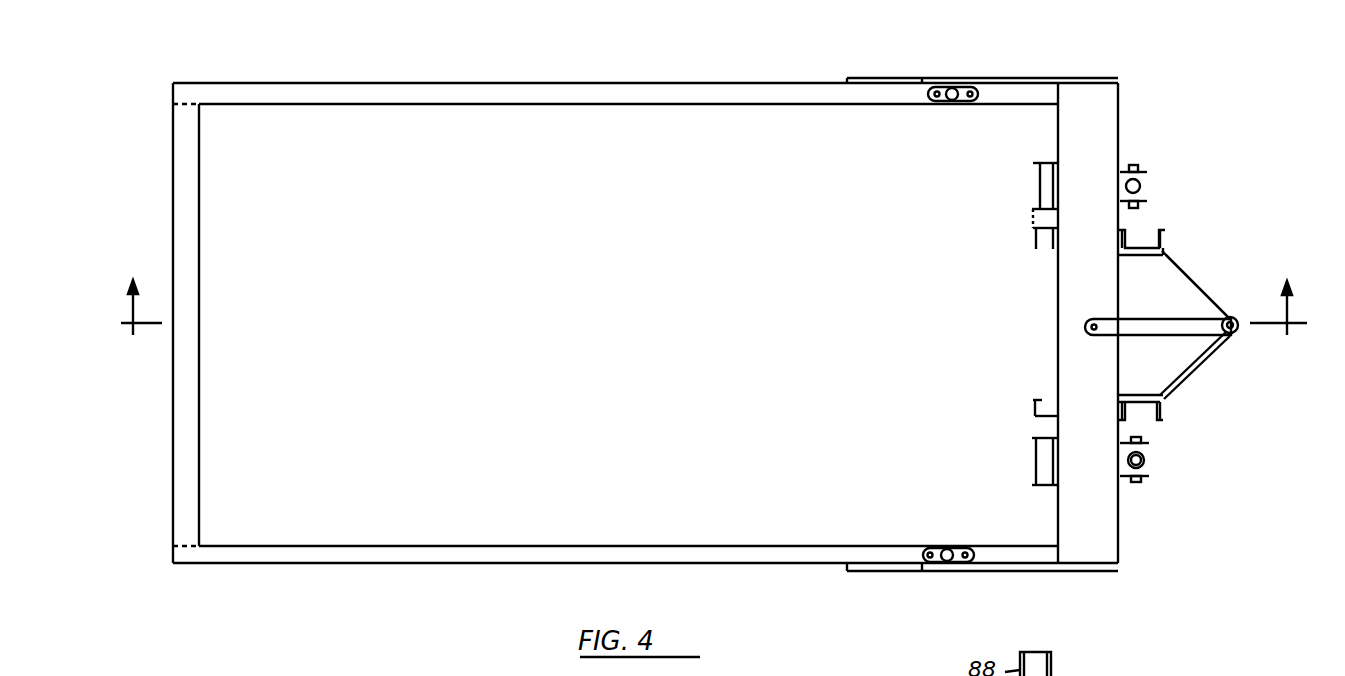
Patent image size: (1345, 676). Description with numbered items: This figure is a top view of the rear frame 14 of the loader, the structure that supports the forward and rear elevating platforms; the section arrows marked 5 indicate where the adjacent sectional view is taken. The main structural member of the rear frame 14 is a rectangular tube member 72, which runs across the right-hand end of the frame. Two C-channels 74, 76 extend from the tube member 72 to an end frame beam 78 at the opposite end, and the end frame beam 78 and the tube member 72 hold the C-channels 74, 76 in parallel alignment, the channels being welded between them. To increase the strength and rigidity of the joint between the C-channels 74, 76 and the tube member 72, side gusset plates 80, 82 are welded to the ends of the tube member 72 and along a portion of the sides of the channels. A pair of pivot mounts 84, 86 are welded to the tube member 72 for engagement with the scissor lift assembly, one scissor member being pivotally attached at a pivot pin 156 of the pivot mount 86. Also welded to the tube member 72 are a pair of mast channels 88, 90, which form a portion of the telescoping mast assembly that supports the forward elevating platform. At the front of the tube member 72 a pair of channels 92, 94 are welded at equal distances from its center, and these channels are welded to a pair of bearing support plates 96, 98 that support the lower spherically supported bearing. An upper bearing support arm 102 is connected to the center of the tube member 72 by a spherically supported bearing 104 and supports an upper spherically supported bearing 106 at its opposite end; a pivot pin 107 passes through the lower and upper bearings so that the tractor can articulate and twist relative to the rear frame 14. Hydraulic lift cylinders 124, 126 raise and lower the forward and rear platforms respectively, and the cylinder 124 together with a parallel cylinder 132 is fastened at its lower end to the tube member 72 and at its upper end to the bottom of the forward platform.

The section line 5- 5 is at (714, 289).
The rear frame 14 is at (352, 578).
The rectangular tube member 72 is at (1100, 557).
The C-channel 74 is at (618, 50).
The C-channel 76 is at (538, 547).
The end frame beam 78 is at (173, 425).
The side gusset plate 80 is at (1012, 78).
The side gusset plate 82 is at (1008, 572).
The pivot mount 84 is at (1026, 192).
The pivot mount 86 is at (1023, 475).
The mast channel 88 is at (1033, 240).
The mast channel 90 is at (1033, 404).
The channel 92 is at (1164, 236).
The channel 94 is at (1162, 416).
The bearing support plate 96 is at (1200, 270).
The bearing support plate 98 is at (1192, 370).
The upper bearing support arm 102 is at (1156, 311).
The spherically supported bearing 104 is at (1086, 336).
The upper spherically supported bearing 106 is at (1232, 318).
The pivot pin 107 is at (1236, 330).
The hydraulic lift cylinder 124 is at (1150, 462).
The hydraulic lift cylinder 126 is at (955, 103).
The parallel cylinder 132 is at (1148, 190).
The pivot pin 156 is at (1036, 450).